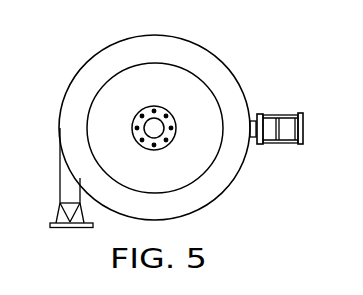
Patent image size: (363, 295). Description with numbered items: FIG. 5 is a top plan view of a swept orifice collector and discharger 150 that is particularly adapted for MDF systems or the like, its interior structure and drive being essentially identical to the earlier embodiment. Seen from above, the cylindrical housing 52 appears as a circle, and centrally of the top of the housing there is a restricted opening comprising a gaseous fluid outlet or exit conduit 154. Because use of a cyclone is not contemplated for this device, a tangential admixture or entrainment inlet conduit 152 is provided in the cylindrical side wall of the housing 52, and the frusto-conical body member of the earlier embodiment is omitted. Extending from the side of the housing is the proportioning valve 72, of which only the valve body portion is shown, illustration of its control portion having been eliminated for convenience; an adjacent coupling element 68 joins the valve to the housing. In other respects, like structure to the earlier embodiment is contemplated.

The cylindrical housing 52 is at (52, 80).
The swept orifice collector and discharger 150 is at (286, 107).
The tangential admixture or entrainment inlet conduit 152 is at (60, 170).
The gaseous fluid outlet or exit conduit 154 is at (158, 108).
The coupling 68 is at (257, 143).
The proportioning valve 72 is at (285, 143).